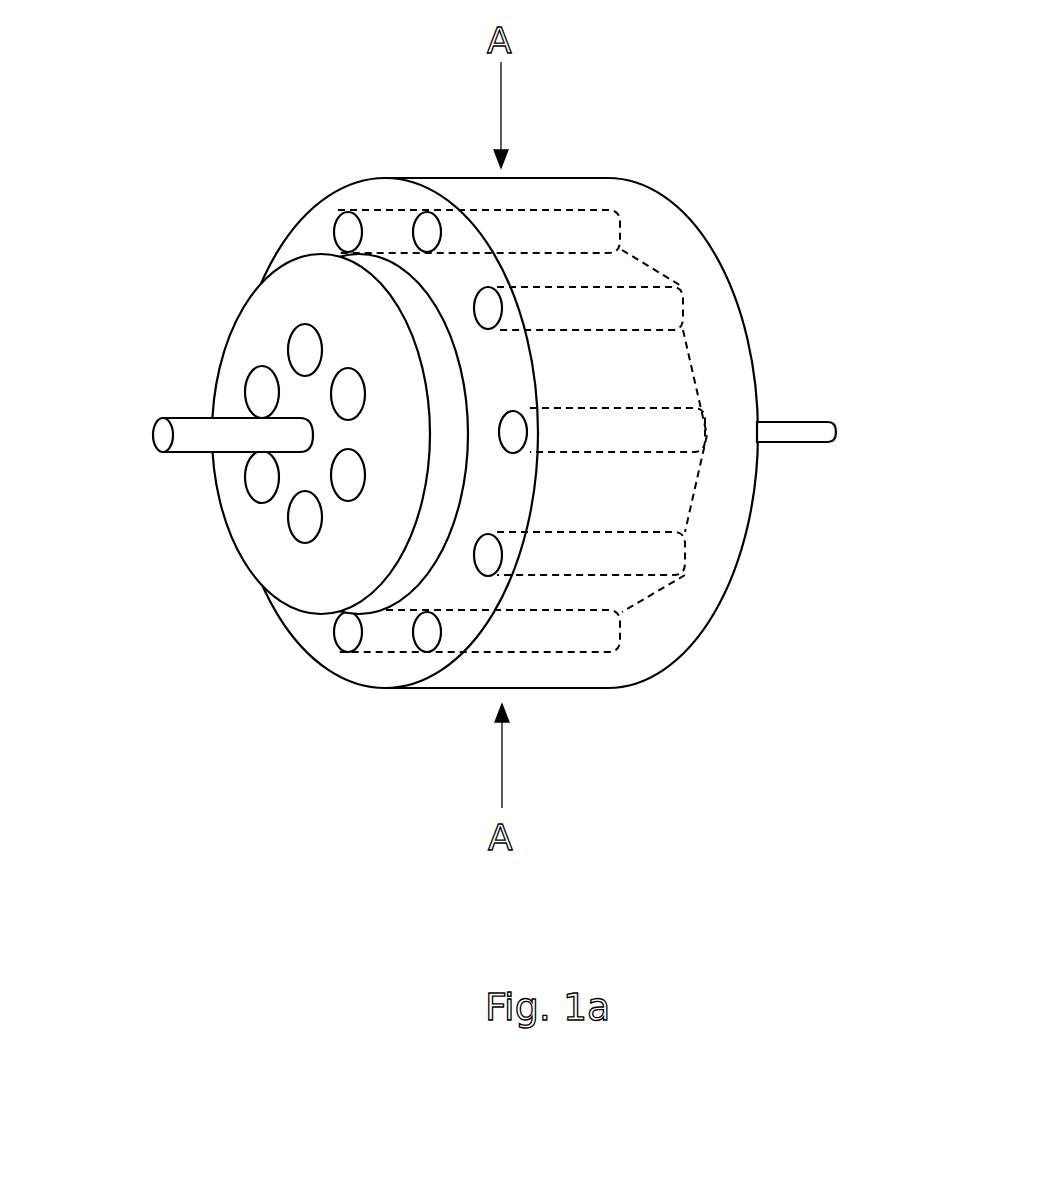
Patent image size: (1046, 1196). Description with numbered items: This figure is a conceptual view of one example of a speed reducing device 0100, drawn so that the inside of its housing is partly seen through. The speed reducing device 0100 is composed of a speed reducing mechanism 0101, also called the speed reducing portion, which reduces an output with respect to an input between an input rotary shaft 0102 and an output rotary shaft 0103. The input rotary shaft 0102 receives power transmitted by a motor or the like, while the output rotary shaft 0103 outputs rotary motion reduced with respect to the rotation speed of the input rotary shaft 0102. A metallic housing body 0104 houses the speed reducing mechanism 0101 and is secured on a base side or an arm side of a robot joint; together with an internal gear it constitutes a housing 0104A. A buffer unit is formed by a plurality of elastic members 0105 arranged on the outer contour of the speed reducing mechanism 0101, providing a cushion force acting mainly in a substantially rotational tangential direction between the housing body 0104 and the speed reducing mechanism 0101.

The speed reducing device 0100 is at (504, 368).
The speed reducing mechanism 0101 is at (653, 377).
The input rotary shaft 0102 is at (815, 428).
The output rotary shaft 0103 is at (188, 427).
The housing body 0104 is at (717, 520).
The housing 0104A is at (757, 487).
The elastic members 0105 is at (532, 208).